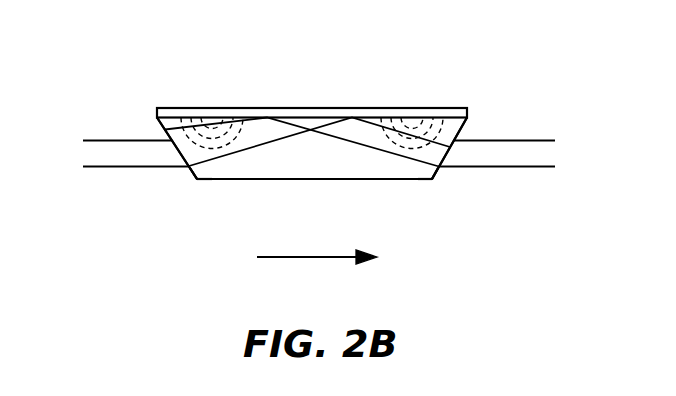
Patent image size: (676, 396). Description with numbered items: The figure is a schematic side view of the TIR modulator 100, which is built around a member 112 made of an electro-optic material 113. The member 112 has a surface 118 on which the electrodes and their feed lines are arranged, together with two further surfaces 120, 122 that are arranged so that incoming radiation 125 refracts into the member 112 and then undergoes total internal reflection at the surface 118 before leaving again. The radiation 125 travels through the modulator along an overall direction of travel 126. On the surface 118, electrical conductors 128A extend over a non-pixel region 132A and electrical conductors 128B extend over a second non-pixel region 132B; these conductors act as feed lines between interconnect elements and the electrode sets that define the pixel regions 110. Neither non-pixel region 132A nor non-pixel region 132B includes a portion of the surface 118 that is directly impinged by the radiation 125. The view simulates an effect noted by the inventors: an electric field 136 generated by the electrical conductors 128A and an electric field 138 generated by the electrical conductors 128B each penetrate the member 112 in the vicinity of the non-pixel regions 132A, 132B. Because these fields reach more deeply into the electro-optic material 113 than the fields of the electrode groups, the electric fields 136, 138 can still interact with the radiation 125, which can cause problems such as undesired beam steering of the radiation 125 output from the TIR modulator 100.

The TIR modulator 100 is at (268, 58).
The pixel regions 110 is at (360, 107).
The electro-optic material 113 is at (270, 163).
The member 112 is at (312, 180).
The electric field 136 is at (160, 126).
The surface 118 is at (458, 127).
The surface 120 is at (190, 178).
The surface 122 is at (438, 176).
The radiation 125 is at (108, 152).
The electric field 138 is at (397, 141).
The non-pixel region 132A is at (253, 90).
The second non-pixel region 132B is at (442, 92).
The electrical conductors 128A is at (203, 107).
The electrical conductors 128B is at (425, 106).
The overall direction of travel 126 is at (297, 260).